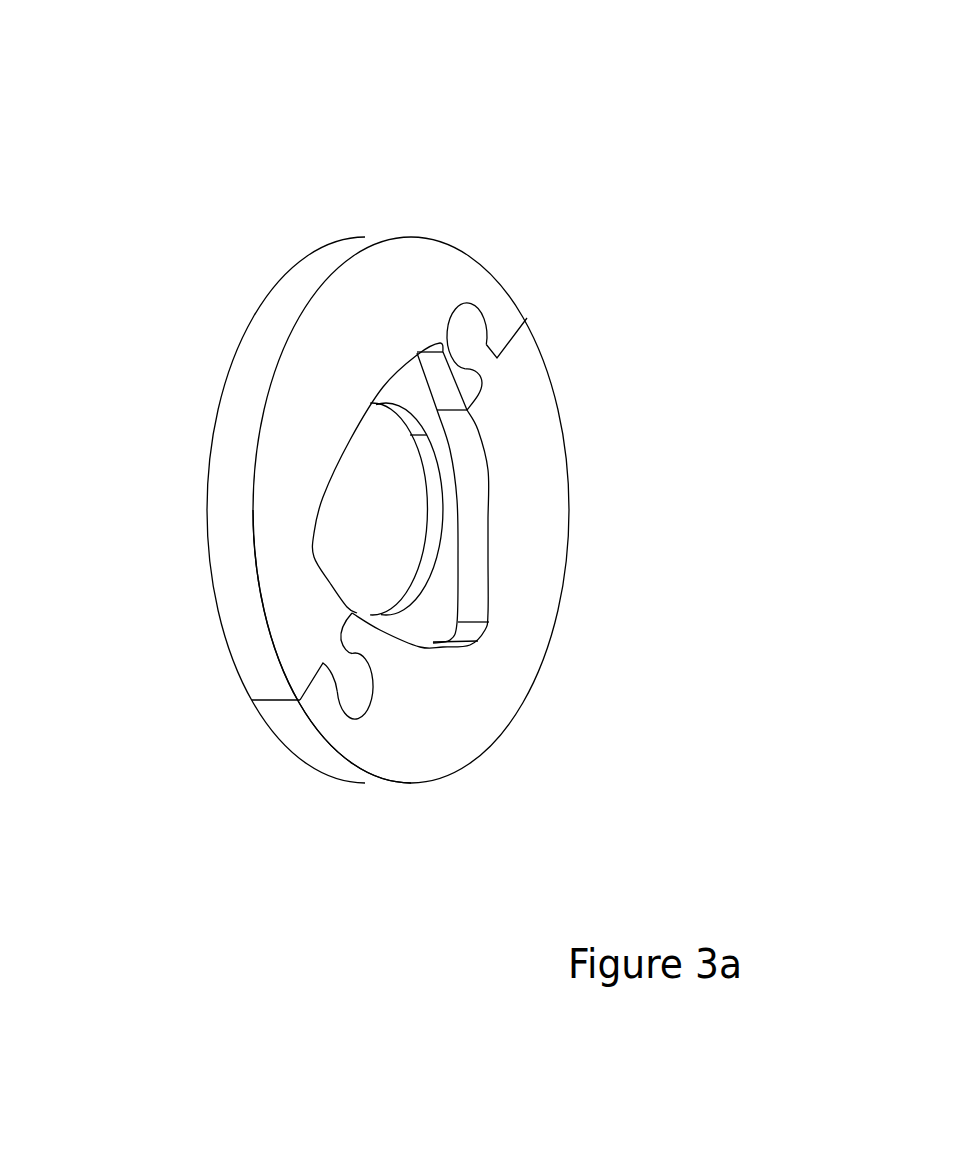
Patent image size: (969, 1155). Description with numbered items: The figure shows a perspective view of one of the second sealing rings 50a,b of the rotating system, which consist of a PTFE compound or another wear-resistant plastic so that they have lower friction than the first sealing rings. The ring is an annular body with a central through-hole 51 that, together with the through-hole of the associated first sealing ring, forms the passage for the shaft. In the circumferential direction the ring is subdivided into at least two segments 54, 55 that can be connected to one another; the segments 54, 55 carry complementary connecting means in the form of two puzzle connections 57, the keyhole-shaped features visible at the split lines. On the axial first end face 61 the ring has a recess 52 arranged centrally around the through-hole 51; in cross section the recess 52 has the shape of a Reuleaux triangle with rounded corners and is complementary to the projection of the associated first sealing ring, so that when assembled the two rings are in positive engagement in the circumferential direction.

The second sealing rings 50a,b is at (333, 195).
The through-hole 51 is at (433, 517).
The recess 52 is at (433, 625).
The segment 54 is at (267, 342).
The segment 55 is at (317, 755).
The puzzle connections 57 is at (500, 328).
The axial first end face 61 is at (532, 455).